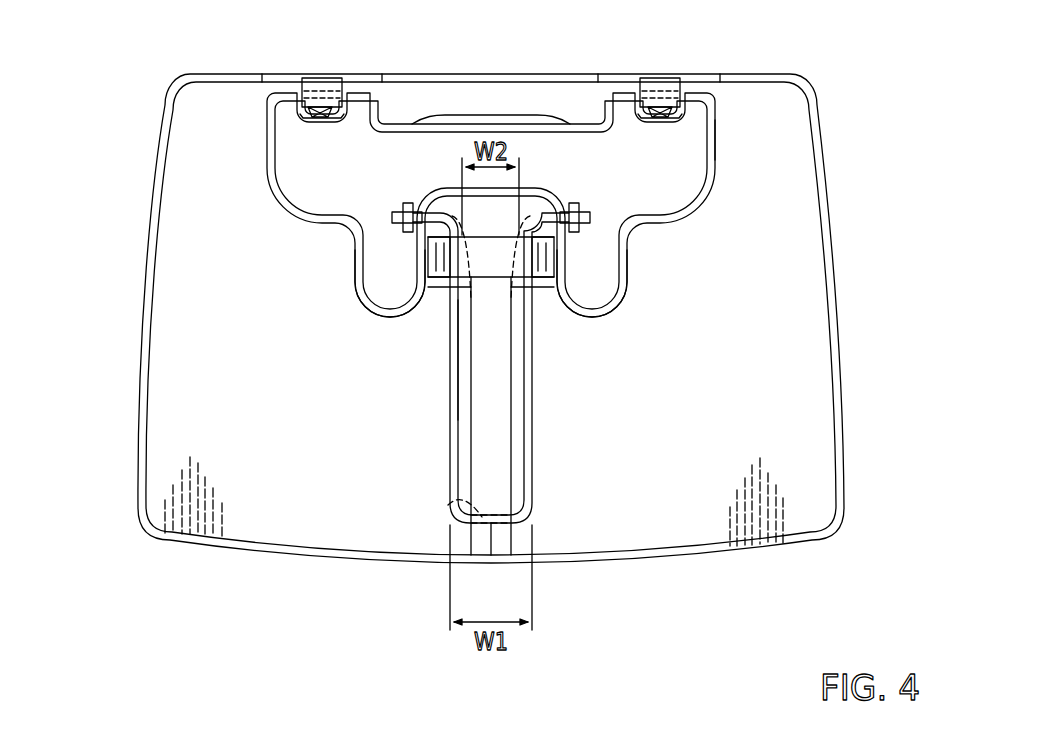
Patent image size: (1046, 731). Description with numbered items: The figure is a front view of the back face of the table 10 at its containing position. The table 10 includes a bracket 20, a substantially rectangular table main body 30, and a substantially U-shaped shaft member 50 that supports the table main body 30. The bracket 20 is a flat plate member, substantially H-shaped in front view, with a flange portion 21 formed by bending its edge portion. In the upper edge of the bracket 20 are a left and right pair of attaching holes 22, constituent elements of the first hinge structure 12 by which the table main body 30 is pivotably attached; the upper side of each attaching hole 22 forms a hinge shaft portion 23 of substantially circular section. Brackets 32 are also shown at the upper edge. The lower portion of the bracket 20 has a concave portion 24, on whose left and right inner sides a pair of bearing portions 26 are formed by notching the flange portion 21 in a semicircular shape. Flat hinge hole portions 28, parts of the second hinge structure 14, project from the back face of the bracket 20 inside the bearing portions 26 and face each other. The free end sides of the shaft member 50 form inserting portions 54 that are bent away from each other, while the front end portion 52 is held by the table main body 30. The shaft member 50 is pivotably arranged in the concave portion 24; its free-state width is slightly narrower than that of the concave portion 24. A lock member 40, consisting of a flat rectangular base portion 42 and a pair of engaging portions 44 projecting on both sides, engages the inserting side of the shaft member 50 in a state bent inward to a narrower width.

The table 10 is at (486, 309).
The first hinge structure 12 is at (492, 105).
The second hinge structure 14 is at (490, 237).
The bracket 20 is at (295, 185).
The flange portion 21 is at (716, 162).
The attaching hole 22 is at (305, 120).
The hinge shaft portion 23 is at (320, 118).
The concave portion 24 is at (443, 268).
The bearing portion 26 is at (385, 297).
The hinge hole portion 28 is at (394, 214).
The table main body 30 is at (847, 457).
The bracket body 32 is at (320, 88).
The lock member 40 is at (564, 384).
The base portion 42 is at (487, 258).
The engaging portion 44 is at (540, 290).
The shaft member 50 is at (458, 422).
The front end portion 52 is at (447, 507).
The inserting portion 54 is at (407, 205).